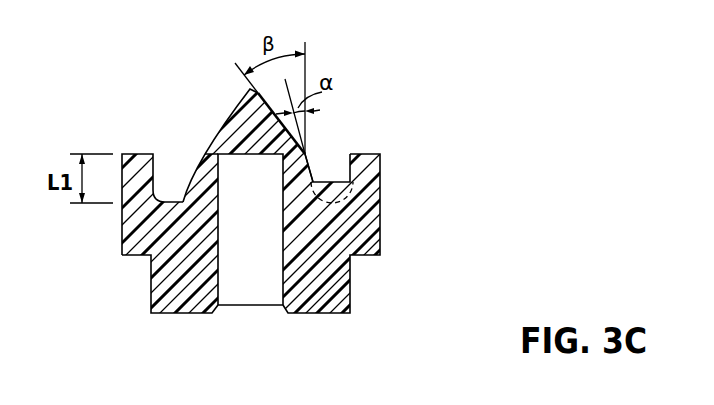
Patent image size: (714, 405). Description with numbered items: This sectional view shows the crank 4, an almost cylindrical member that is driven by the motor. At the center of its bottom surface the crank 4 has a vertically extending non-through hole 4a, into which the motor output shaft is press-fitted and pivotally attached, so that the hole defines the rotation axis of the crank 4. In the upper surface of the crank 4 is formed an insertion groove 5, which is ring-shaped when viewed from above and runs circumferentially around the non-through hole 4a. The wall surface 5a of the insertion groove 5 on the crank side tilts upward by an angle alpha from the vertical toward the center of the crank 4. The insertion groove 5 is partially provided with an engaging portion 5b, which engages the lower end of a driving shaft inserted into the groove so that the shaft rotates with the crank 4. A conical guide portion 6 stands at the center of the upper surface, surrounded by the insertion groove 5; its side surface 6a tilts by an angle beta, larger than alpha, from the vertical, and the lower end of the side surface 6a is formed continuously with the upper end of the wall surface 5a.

The crank 4 is at (397, 172).
The non-through hole 4a is at (282, 257).
The insertion groove 5 is at (330, 168).
The wall surface of the insertion groove 5a is at (311, 162).
The engaging portion 5b is at (338, 203).
The guide portion 6 is at (223, 118).
The side surface of the guide portion 6a is at (270, 100).